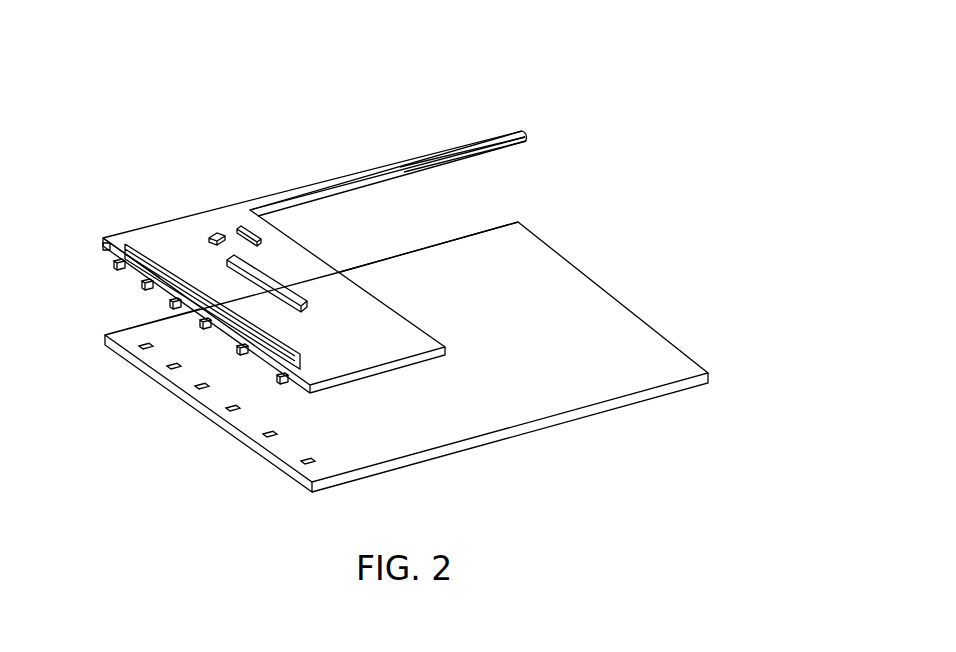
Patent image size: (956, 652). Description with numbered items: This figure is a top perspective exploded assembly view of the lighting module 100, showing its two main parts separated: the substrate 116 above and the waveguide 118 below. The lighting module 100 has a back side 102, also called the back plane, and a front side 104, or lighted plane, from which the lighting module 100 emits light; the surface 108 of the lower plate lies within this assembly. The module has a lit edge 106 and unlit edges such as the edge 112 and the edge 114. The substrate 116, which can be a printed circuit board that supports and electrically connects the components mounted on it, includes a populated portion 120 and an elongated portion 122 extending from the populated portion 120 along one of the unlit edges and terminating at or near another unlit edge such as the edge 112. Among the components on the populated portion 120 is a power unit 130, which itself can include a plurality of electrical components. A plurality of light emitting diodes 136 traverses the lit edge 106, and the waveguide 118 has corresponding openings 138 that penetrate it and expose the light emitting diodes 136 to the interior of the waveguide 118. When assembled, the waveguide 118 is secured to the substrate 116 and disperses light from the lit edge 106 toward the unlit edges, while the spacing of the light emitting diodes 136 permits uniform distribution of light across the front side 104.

The lighting module 100 is at (576, 53).
The back side 102 is at (281, 251).
The front side 104 is at (397, 345).
The lit edge 106 is at (95, 226).
The top surface of second circuit board 108 is at (424, 241).
The unlit edge 112 is at (623, 284).
The unlit edge 114 is at (686, 401).
The substrate 116 is at (321, 173).
The waveguide 118 is at (556, 434).
The populated portion 120 is at (165, 233).
The elongated portion 122 is at (422, 156).
The power unit 130 is at (308, 307).
The light emitting diodes 136 is at (112, 267).
The openings 138 is at (130, 335).